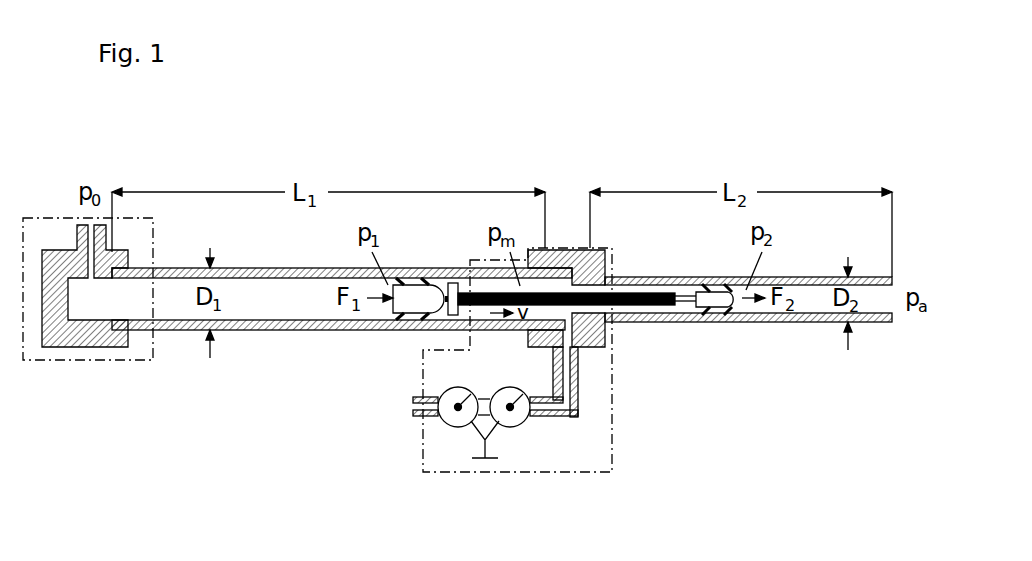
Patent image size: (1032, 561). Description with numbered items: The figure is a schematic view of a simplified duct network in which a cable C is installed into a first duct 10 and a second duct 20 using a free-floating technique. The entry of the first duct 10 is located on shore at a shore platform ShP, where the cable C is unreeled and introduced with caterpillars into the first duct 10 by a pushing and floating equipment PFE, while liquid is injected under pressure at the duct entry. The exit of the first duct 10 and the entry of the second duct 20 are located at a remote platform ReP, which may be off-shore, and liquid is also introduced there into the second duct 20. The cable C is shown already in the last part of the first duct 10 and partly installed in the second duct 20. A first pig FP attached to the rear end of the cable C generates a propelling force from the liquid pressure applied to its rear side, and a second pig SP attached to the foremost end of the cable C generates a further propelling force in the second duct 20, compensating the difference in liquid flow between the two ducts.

The first duct 10 is at (253, 330).
The second duct 20 is at (880, 322).
The shore platform ShP is at (90, 360).
The pushing and floating equipment PFE is at (103, 347).
The first pig FP is at (413, 302).
The second pig SP is at (712, 316).
The cable C is at (620, 305).
The remote platform ReP is at (563, 472).